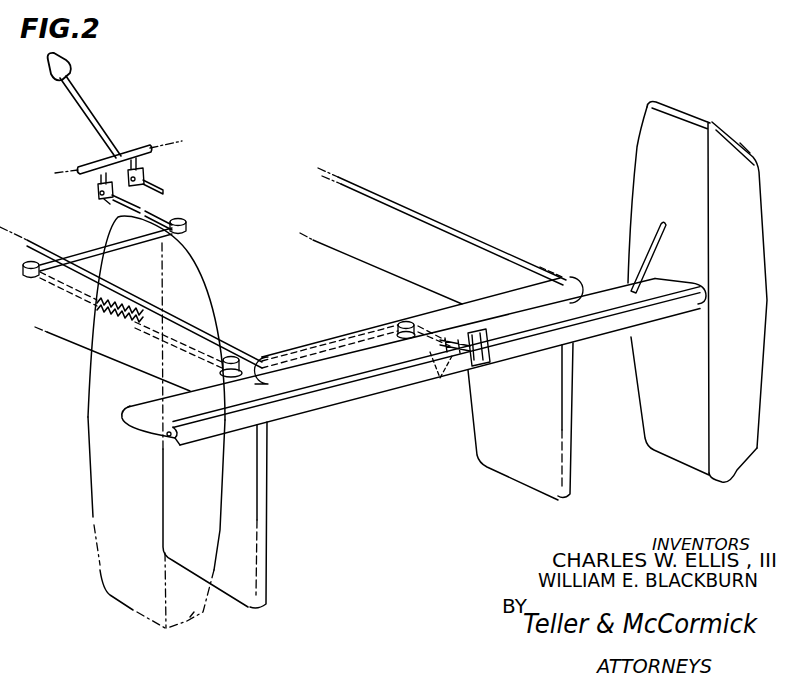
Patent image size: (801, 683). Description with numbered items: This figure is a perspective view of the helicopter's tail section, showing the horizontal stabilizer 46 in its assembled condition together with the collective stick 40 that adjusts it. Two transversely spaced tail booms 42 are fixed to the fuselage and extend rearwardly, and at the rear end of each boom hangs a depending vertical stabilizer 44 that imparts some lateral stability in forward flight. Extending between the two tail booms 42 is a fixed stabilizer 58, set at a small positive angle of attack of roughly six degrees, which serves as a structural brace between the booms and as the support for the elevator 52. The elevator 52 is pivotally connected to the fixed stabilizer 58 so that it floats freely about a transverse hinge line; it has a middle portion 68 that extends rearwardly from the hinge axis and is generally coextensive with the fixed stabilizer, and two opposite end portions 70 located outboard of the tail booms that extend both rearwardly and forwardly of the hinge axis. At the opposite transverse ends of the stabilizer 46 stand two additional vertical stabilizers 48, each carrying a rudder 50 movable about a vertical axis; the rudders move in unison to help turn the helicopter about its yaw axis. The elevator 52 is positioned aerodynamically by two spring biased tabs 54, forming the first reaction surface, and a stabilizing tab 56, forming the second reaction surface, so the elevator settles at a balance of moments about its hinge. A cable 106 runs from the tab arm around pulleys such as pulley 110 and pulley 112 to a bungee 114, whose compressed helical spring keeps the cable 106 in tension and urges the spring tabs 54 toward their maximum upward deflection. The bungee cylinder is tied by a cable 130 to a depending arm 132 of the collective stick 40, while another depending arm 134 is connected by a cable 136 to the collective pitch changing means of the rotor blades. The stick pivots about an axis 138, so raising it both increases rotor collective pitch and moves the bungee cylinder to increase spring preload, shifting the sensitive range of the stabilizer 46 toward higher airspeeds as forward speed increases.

The collective stick 40 is at (87, 103).
The tail booms 42 is at (435, 220).
The depending vertical stabilizer 44 is at (262, 552).
The horizontal stabilizer 46 is at (331, 306).
The vertical stabilizers 48 is at (100, 572).
The rudder 50 is at (740, 143).
The elevator 52 is at (606, 296).
The spring biased tabs 54 is at (283, 413).
The stabilizing tab 56 is at (353, 405).
The fixed stabilizer 58 is at (418, 312).
The middle portion 68 is at (363, 364).
The end portions 70 is at (143, 401).
The cable 106 is at (152, 346).
The pulley 110 is at (422, 325).
The pulley 112 is at (232, 356).
The bungee 114 is at (112, 329).
The cable 130 is at (163, 210).
The depending arm 132 is at (97, 184).
The depending arm 134 is at (146, 172).
The cable 136 is at (163, 187).
The axis 138 is at (163, 143).